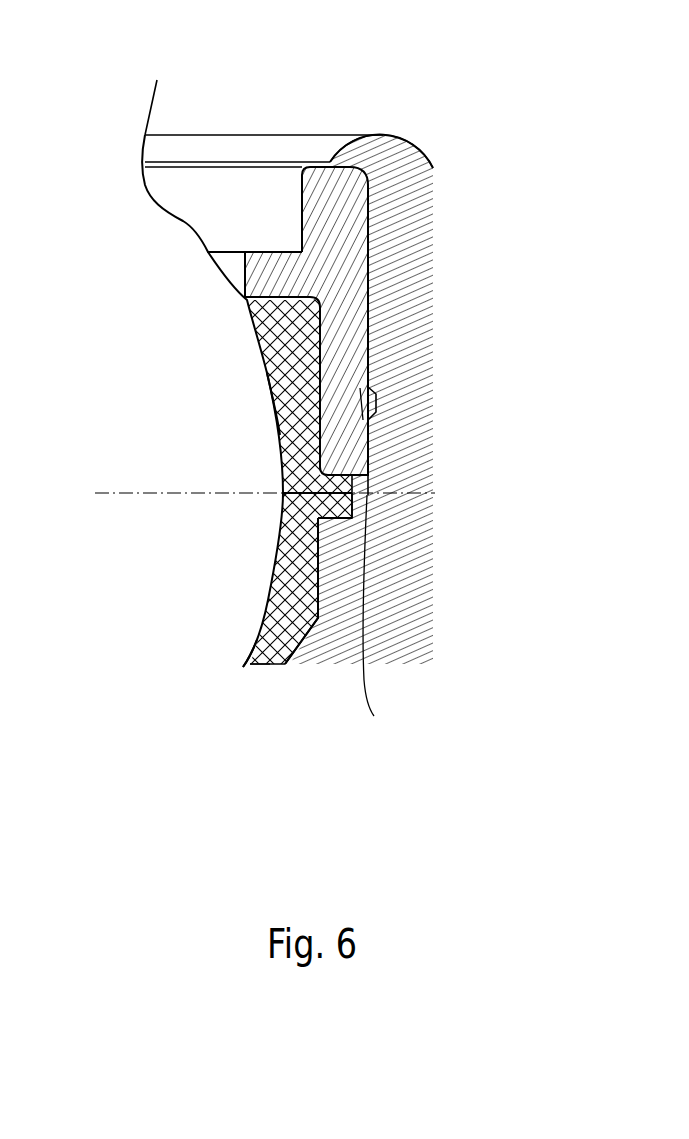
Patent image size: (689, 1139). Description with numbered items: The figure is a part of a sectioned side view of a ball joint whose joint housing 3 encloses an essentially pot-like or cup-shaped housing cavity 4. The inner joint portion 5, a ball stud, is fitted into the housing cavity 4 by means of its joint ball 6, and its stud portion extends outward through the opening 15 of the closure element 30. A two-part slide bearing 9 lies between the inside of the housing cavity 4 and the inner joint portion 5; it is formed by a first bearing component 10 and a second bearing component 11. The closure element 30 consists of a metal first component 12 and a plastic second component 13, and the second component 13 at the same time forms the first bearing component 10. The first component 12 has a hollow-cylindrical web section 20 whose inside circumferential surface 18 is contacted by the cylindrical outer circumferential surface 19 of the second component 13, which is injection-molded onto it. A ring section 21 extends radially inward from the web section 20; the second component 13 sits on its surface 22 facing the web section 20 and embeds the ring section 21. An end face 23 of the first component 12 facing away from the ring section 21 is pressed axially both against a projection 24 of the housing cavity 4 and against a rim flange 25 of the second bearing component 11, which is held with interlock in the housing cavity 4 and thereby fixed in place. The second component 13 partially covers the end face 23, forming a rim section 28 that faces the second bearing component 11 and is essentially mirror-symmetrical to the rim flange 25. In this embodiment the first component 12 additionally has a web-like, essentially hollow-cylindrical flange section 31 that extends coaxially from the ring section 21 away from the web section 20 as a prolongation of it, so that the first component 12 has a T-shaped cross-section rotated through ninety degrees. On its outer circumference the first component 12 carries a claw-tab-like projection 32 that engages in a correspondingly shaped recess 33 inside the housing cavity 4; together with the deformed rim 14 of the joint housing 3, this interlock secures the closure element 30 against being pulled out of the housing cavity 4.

The joint housing 3 is at (427, 660).
The housing cavity 4 is at (324, 650).
The inner joint portion 5 is at (135, 233).
The joint ball 6 is at (197, 612).
The two-part slide bearing 9 is at (244, 555).
The first bearing component 10 is at (169, 494).
The second bearing component 11 is at (272, 656).
The first component 12 is at (360, 273).
The second component 13 is at (280, 347).
The rim 14 is at (401, 136).
The opening 15 is at (183, 108).
The inside circumferential surface 18 is at (282, 439).
The outer circumferential surface 19 is at (326, 338).
The web section 20 is at (340, 360).
The ring section 21 is at (302, 270).
The surface 22 is at (262, 305).
The end face 23 is at (367, 495).
The projection 24 is at (385, 615).
The rim flange 25 is at (314, 505).
The rim section 28 is at (314, 482).
The closure element 30 is at (238, 402).
The flange section 31 is at (334, 220).
The projection 32 is at (368, 386).
The recess 33 is at (383, 424).